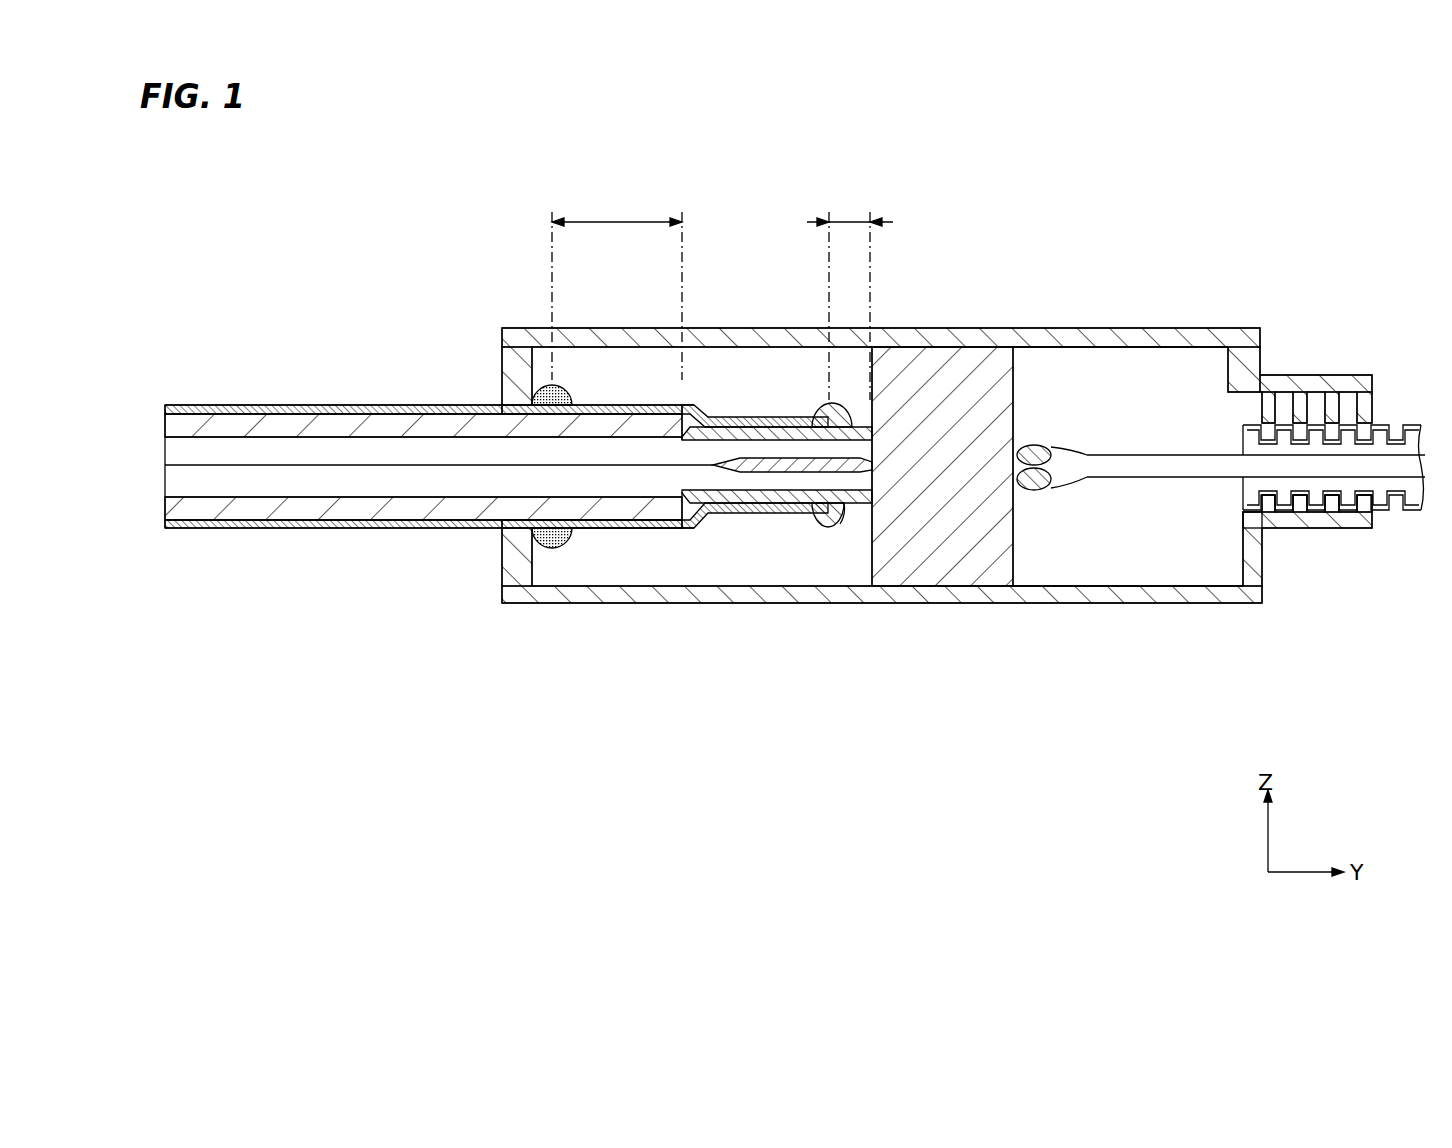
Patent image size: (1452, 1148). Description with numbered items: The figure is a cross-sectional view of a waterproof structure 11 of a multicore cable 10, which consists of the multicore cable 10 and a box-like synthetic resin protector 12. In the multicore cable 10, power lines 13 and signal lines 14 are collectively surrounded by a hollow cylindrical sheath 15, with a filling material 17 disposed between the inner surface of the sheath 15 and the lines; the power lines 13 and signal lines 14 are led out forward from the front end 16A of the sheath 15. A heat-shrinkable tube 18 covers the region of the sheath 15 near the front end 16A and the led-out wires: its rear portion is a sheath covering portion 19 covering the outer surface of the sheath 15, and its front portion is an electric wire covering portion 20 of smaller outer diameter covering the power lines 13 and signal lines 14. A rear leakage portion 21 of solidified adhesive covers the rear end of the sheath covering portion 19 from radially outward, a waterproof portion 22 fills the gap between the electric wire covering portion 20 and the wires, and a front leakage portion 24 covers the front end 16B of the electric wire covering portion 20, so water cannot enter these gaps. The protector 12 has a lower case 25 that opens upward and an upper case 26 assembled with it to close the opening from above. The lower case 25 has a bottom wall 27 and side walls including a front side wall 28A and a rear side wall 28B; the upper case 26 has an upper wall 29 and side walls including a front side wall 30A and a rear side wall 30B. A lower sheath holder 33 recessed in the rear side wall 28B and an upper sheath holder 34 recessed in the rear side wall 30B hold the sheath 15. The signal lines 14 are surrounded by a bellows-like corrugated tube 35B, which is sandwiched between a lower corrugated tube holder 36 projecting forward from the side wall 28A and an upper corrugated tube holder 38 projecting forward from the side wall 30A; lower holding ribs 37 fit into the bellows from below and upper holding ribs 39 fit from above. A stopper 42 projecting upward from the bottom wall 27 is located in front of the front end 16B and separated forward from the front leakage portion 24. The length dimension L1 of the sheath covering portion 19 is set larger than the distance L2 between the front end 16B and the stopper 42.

The multicore cable 10 is at (897, 870).
The waterproof structure 11 is at (1078, 240).
The protector 12 is at (1230, 240).
The power line 13 is at (350, 447).
The signal line 14 is at (1078, 478).
The sheath 15 is at (205, 529).
The front end of the sheath 16A is at (700, 514).
The front end of the electric wire covering portion 16B is at (841, 520).
The filling material 17 is at (387, 510).
The heat-shrinkable tube 18 is at (742, 695).
The sheath covering portion 19 is at (622, 522).
The electric wire covering portion 20 is at (770, 510).
The rear leakage portion 21 is at (558, 549).
The waterproof portion 22 is at (698, 405).
The front leakage portion 24 is at (822, 526).
The lower case 25 is at (1187, 587).
The upper case 26 is at (1131, 328).
The bottom wall 27 is at (1073, 585).
The side wall 28A is at (1243, 557).
The side wall 28B is at (508, 555).
The upper wall 29 is at (1073, 350).
The side wall 30A is at (1247, 356).
The side wall 30B is at (512, 366).
The lower sheath holder 33 is at (508, 512).
The upper sheath holder 34 is at (495, 415).
The corrugated tube 35B is at (1417, 423).
The lower corrugated tube holder 36 is at (1333, 520).
The lower holding rib 37 is at (1270, 497).
The upper corrugated tube holder 38 is at (1348, 383).
The upper holding rib 39 is at (1275, 407).
The stopper 42 is at (873, 558).
The length dimension of the sheath covering portion L1 is at (616, 220).
The distance between the front end of the electric wire covering portion and the sto L2 is at (848, 220).